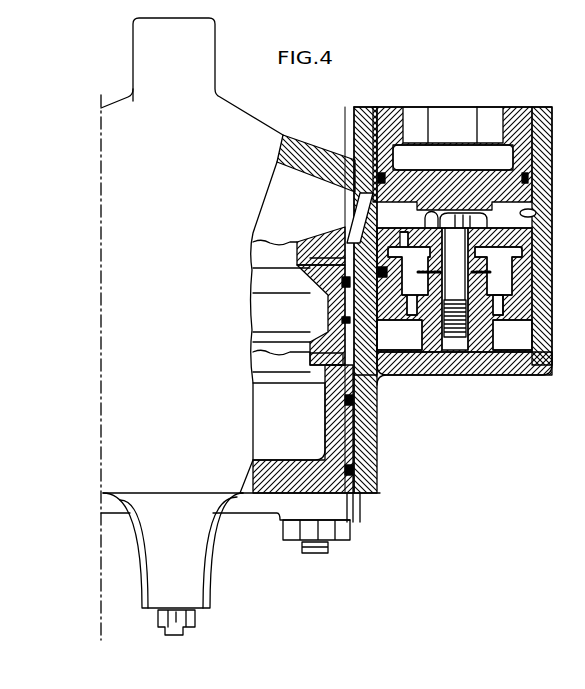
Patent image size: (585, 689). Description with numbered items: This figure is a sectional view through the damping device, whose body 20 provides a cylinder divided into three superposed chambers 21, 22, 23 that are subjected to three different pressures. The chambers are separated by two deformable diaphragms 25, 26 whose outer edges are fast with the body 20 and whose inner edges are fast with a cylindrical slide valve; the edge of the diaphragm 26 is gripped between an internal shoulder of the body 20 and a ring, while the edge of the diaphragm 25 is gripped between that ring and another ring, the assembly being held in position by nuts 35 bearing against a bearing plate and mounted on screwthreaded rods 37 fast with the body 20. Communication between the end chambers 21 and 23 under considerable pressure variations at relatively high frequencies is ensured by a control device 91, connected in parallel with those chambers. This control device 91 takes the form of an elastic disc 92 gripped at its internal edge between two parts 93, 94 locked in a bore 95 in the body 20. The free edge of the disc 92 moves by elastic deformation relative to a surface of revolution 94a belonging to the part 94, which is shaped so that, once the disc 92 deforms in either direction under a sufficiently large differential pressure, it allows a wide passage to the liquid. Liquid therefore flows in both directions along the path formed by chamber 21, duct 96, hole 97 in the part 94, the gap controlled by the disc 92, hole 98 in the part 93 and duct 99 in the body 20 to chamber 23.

The body 20 is at (330, 152).
The chamber 21 is at (303, 429).
The chamber 22 is at (264, 311).
The chamber 23 is at (271, 199).
The deformable diaphragm 25 is at (298, 362).
The deformable diaphragm 26 is at (299, 247).
The nut 35 is at (352, 537).
The screwthreaded rod 37 is at (328, 551).
The control device 91 is at (527, 336).
The elastic disc 92 is at (517, 272).
The part 93 is at (491, 233).
The part 94 is at (447, 363).
The surface of revolution 94a is at (507, 290).
The bore 95 is at (537, 213).
The duct 96 is at (384, 366).
The hole 97 is at (415, 315).
The hole 98 is at (408, 236).
The duct 99 is at (350, 224).